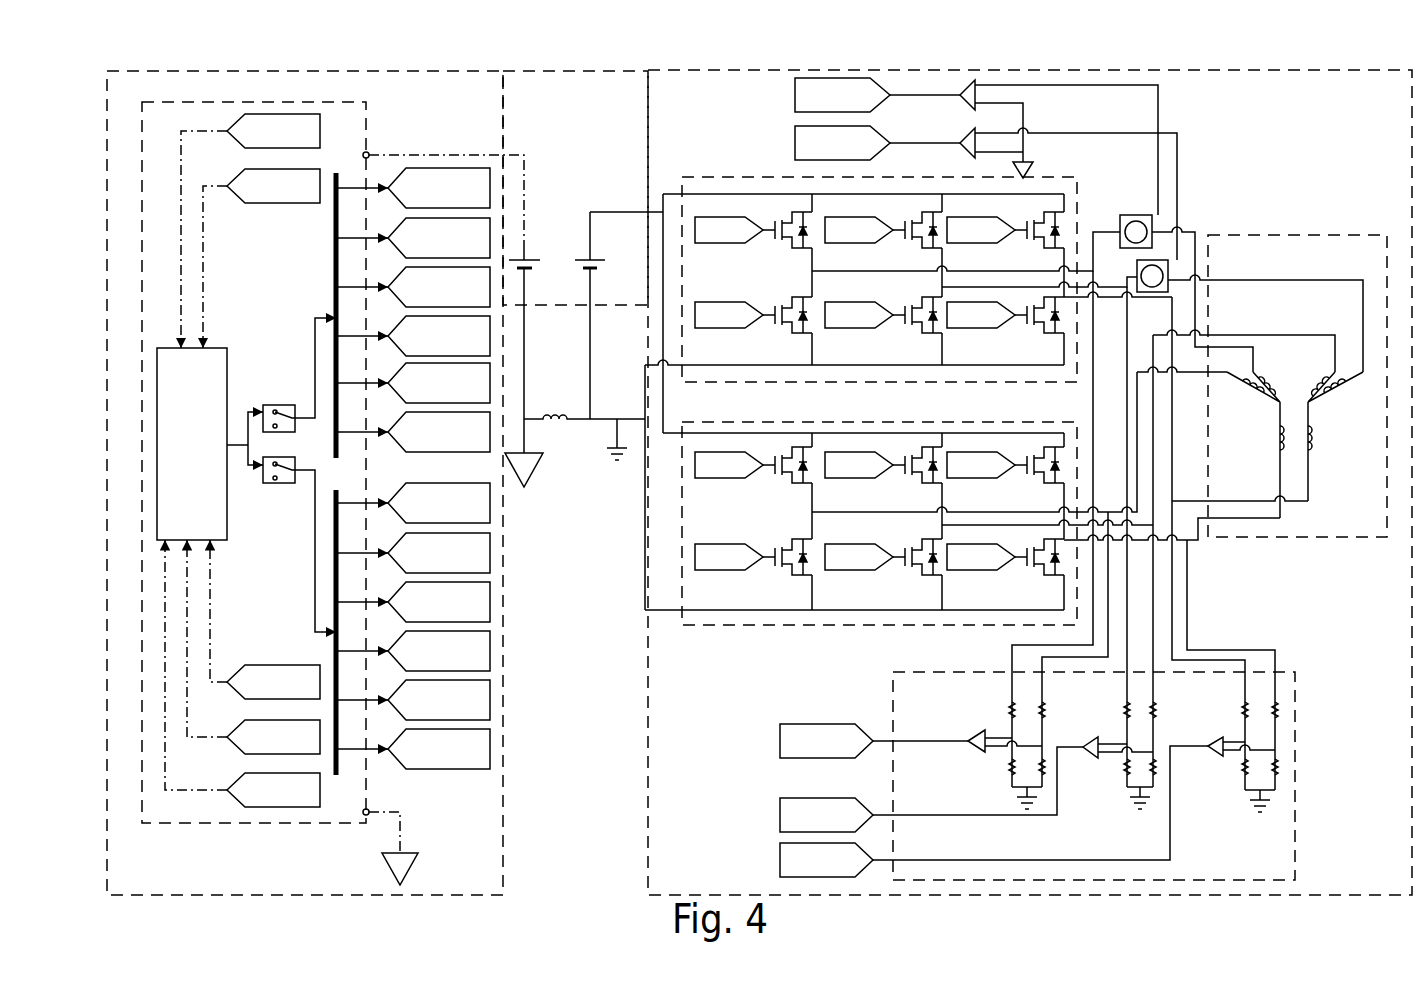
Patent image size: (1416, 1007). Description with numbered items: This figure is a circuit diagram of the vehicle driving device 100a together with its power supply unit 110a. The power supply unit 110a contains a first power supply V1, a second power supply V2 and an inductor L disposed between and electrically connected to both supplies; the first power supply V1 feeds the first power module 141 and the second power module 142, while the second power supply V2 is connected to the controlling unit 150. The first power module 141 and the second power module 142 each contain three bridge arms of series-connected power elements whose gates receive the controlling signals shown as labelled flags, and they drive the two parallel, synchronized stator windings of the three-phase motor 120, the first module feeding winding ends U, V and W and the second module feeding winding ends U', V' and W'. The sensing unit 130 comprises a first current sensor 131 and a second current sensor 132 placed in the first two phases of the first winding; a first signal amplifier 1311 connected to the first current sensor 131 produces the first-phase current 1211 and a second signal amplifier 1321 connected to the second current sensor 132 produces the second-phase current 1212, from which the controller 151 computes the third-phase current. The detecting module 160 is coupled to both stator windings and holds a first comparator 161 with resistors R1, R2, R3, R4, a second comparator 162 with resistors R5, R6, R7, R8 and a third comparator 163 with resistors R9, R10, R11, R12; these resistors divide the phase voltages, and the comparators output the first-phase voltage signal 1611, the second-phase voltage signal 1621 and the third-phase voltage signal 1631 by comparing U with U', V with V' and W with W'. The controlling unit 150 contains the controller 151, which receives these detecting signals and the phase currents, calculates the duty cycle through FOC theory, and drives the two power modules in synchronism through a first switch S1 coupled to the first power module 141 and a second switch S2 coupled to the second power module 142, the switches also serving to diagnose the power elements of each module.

The vehicle driving device 100a is at (158, 72).
The power supply unit 110a is at (610, 92).
The three-phase motor 120 is at (1317, 233).
The sensing unit 130 is at (1265, 148).
The first current sensor 131 is at (1150, 212).
The second current sensor 132 is at (1172, 252).
The first power module 141 is at (770, 382).
The second power module 142 is at (770, 630).
The controlling unit 150 is at (170, 825).
The controller 151 is at (192, 444).
The detecting module 160 is at (1300, 702).
The first comparator 161 is at (993, 758).
The second comparator 162 is at (1112, 767).
The third comparator 163 is at (1236, 767).
The first-phase current 1211 is at (558, 113).
The second-phase current 1212 is at (558, 164).
The first signal amplifier 1311 is at (1032, 94).
The second signal amplifier 1321 is at (1038, 149).
The first-phase voltage signal 1611 is at (550, 711).
The second-phase voltage signal 1621 is at (550, 776).
The third-phase voltage signal 1631 is at (550, 825).
The first switch S1 is at (292, 405).
The second switch S2 is at (292, 487).
The first power supply V1 is at (589, 252).
The second power supply V2 is at (533, 252).
The inductor L is at (561, 410).
The resistor R1 is at (992, 710).
The resistor R2 is at (1047, 708).
The resistor R3 is at (995, 782).
The resistor R4 is at (1047, 765).
The resistor R5 is at (1118, 715).
The resistor R6 is at (1182, 700).
The resistor R7 is at (1120, 787).
The resistor R8 is at (1163, 772).
The resistor R9 is at (1240, 707).
The resistor R10 is at (1280, 717).
The resistor R11 is at (1242, 783).
The resistor R12 is at (1283, 773).